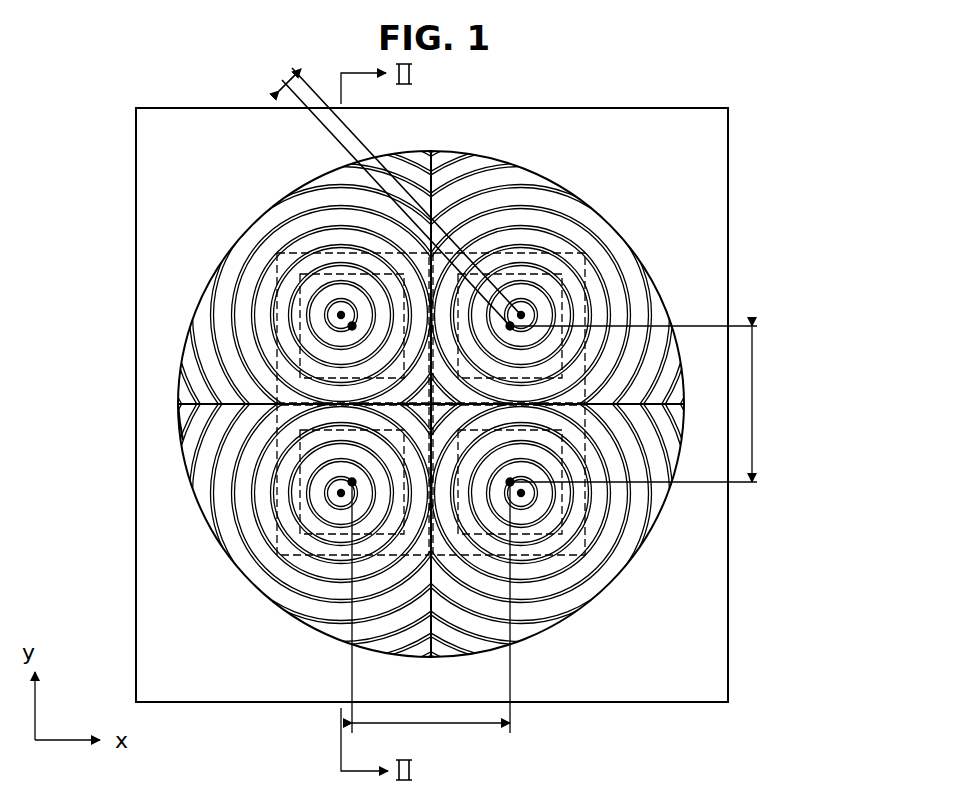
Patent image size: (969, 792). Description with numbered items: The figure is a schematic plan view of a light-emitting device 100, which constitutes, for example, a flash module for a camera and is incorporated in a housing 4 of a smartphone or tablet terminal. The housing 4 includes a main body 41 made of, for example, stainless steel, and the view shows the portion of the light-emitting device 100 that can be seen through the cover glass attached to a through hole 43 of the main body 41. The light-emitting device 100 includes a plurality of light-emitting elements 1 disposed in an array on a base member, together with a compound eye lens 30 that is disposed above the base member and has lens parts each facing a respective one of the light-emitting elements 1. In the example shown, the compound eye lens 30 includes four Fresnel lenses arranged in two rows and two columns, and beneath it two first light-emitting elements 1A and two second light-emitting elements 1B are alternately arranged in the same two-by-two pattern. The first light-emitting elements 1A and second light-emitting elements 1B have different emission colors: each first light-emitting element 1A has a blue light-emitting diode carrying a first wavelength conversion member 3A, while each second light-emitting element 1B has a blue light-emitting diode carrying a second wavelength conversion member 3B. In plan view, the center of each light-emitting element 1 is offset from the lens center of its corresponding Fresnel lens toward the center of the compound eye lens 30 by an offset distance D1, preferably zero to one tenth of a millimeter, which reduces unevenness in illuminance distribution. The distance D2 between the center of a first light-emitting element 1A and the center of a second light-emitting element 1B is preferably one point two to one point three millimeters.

The light-emitting element 1 is at (431, 404).
The first light-emitting element 1A is at (431, 404).
The second light-emitting element 1B is at (431, 404).
The first wavelength conversion member 3A is at (277, 310).
The second wavelength conversion member 3B is at (585, 310).
The housing 4 is at (728, 160).
The compound eye lens 30 is at (658, 292).
The main body 41 is at (690, 133).
The through hole 43 is at (185, 455).
The light-emitting device 100 is at (540, 162).
The offset distance D1 is at (388, 188).
The distance between light-emitting element centers D2 is at (572, 542).